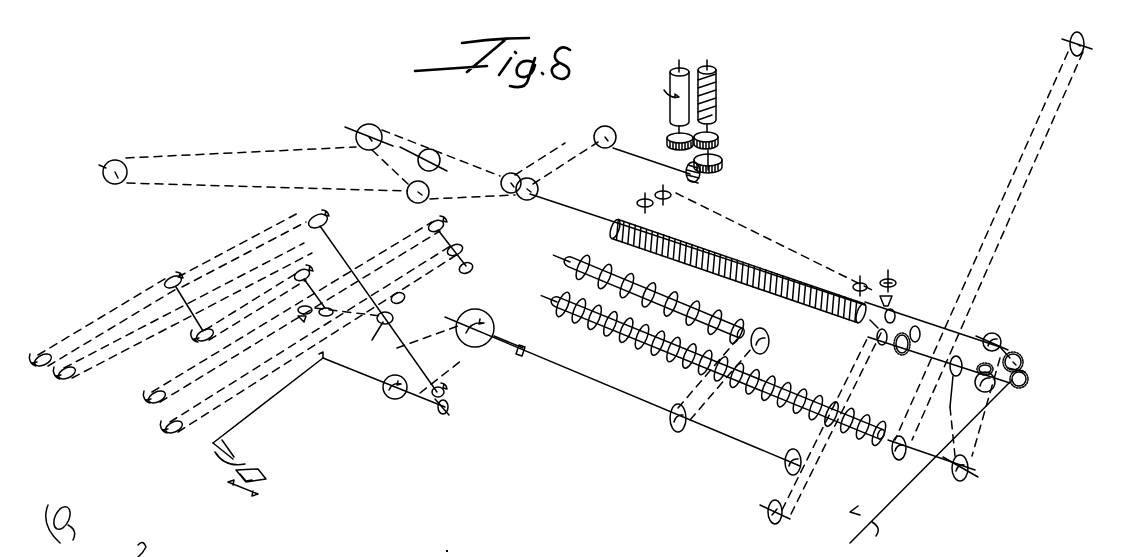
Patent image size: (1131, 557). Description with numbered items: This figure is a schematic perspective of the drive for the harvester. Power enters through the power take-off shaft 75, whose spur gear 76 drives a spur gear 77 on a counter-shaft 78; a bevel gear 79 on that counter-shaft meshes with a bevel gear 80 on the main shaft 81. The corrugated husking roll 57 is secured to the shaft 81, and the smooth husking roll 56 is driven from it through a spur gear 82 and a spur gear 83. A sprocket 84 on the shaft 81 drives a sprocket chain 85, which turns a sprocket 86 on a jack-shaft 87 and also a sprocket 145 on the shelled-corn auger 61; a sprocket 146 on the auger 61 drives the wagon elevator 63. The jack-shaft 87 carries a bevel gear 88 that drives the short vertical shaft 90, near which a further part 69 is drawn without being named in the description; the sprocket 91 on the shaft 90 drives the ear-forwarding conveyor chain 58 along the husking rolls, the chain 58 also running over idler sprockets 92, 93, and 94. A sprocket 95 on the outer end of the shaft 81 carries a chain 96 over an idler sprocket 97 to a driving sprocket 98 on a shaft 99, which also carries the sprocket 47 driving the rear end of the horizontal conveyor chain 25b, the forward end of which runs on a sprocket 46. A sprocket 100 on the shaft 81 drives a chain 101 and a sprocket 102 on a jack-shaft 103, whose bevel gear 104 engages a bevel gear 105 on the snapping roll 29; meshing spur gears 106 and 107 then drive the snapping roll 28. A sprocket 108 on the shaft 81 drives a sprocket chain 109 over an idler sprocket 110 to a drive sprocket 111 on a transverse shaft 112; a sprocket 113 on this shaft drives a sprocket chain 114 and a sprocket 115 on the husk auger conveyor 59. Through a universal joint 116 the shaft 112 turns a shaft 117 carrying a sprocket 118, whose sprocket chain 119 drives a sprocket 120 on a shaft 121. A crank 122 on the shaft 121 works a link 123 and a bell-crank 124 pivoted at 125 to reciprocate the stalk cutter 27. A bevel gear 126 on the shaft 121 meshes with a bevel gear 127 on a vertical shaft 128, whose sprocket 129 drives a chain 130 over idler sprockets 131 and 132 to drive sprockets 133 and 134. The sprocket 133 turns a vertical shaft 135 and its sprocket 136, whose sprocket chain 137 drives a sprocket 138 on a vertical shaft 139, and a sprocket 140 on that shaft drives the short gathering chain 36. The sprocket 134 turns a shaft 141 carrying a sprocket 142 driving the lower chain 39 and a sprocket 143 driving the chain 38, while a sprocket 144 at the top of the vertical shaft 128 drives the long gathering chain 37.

The sprocket 46 is at (120, 163).
The belt 25b is at (288, 148).
The driving sprocket 98 is at (370, 123).
The shaft 99 is at (398, 138).
The sprocket 47 is at (437, 150).
The idler sprocket 97 is at (430, 190).
The chain 96 is at (483, 158).
The sprocket 95 is at (515, 172).
The sprocket 100 is at (533, 200).
The chain 101 is at (563, 145).
The sprocket 102 is at (612, 128).
The jack-shaft 103 is at (641, 158).
The snapping roll 28 is at (670, 85).
The snapping roll 29 is at (718, 97).
The spur gear 107 is at (673, 132).
The spur gear 106 is at (720, 136).
The bevel gear 105 is at (722, 158).
The bevel gear 104 is at (700, 178).
The idler sprocket 93 is at (663, 188).
The idler sprocket 94 is at (640, 200).
The shaft 81 is at (914, 344).
The conveyor chain 58 is at (795, 240).
The husking roll 56 is at (770, 272).
The husking roll 57 is at (780, 310).
The auger conveyor 59 is at (683, 303).
The auger 61 is at (647, 347).
The sprocket 115 is at (768, 349).
The sprocket chain 114 is at (713, 400).
The sprocket 113 is at (672, 430).
The transverse shaft 112 is at (738, 442).
The drive sprocket 111 is at (788, 450).
The idler sprocket 110 is at (770, 520).
The sprocket chain 109 is at (858, 390).
The sprocket 146 is at (896, 459).
The sprocket 145 is at (970, 459).
The power take-off shaft 75 is at (905, 480).
The sprocket 84 is at (951, 408).
The sprocket chain 85 is at (980, 438).
The sprocket 86 is at (1007, 350).
The counter-shaft 78 is at (1020, 355).
The spur gear 77 is at (1026, 368).
The spur gear 76 is at (1027, 383).
The bevel gear 80 is at (983, 367).
The bevel gear 79 is at (995, 390).
The spur gear 82 is at (898, 354).
The sprocket 108 is at (877, 343).
The spur gear 83 is at (922, 320).
The jack-shaft 87 is at (902, 310).
The bevel gear 88 is at (896, 296).
The bearing 69 is at (898, 280).
The vertical shaft 90 is at (885, 272).
The sprocket 91 is at (893, 277).
The idler sprocket 92 is at (861, 273).
The wagon elevator 63 is at (1003, 244).
The short inclined gathering chain 36 is at (128, 305).
The long inclined gathering chain 37 is at (271, 243).
The sprocket 140 is at (173, 275).
The vertical shaft 139 is at (197, 318).
The sprocket 138 is at (195, 335).
The sprocket 144 is at (322, 212).
The sprocket 136 is at (304, 268).
The sprocket chain 137 is at (265, 291).
The vertical shaft 135 is at (303, 308).
The idler sprocket 132 is at (300, 322).
The drive sprocket 133 is at (330, 308).
The chain 130 is at (350, 326).
The idler sprocket 131 is at (398, 292).
The chain 38 is at (358, 267).
The lower chain 39 is at (419, 270).
The sprocket 143 is at (428, 226).
The sprocket 142 is at (458, 242).
The shaft 141 is at (463, 252).
The drive sprocket 134 is at (473, 270).
The vertical shaft 128 is at (394, 322).
The sprocket 129 is at (380, 342).
The sprocket 118 is at (484, 313).
The shaft 117 is at (503, 340).
The universal joint 116 is at (524, 358).
The sprocket chain 119 is at (460, 360).
The crank 122 is at (318, 361).
The shaft 121 is at (367, 380).
The sprocket 120 is at (397, 399).
The link 123 is at (268, 398).
The pivot 125 is at (240, 448).
The bell-crank 124 is at (244, 464).
The reciprocating stalk cutter 27 is at (262, 480).
The bevel gear 127 is at (448, 396).
The bevel gear 126 is at (447, 416).